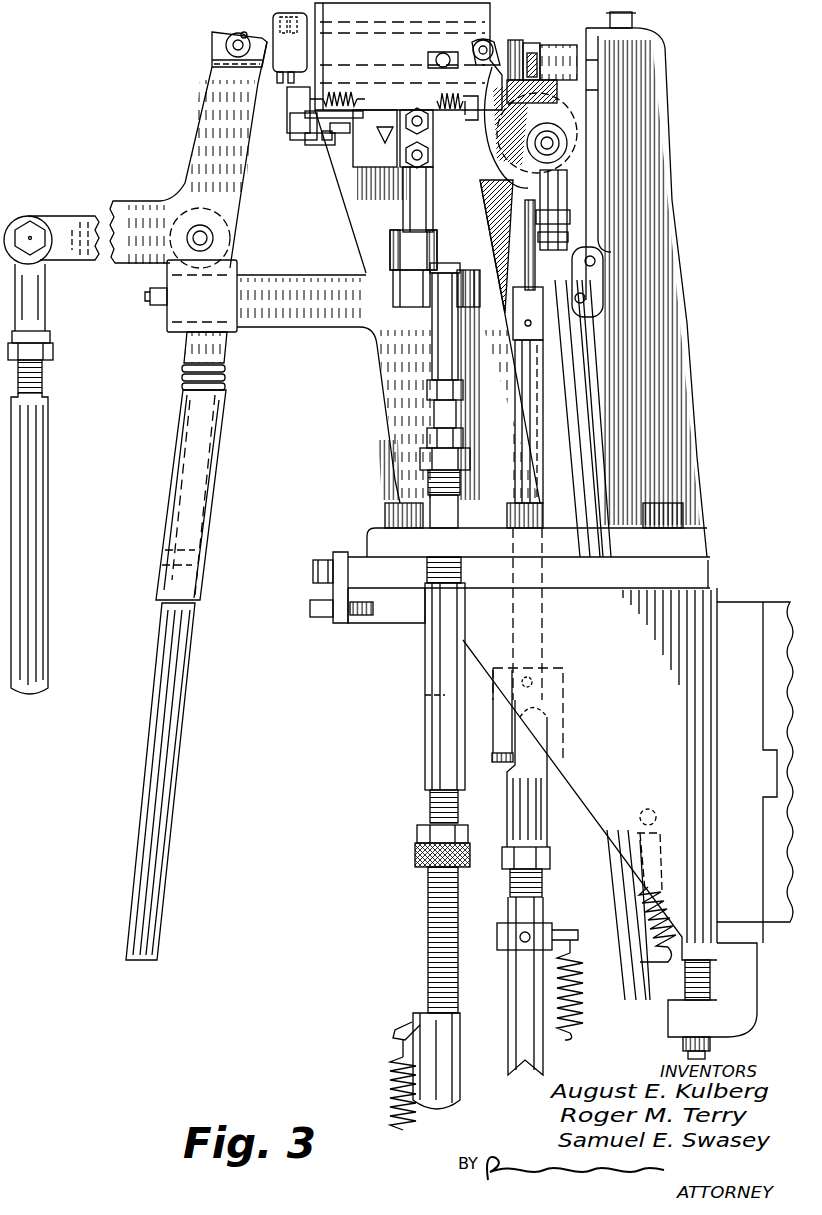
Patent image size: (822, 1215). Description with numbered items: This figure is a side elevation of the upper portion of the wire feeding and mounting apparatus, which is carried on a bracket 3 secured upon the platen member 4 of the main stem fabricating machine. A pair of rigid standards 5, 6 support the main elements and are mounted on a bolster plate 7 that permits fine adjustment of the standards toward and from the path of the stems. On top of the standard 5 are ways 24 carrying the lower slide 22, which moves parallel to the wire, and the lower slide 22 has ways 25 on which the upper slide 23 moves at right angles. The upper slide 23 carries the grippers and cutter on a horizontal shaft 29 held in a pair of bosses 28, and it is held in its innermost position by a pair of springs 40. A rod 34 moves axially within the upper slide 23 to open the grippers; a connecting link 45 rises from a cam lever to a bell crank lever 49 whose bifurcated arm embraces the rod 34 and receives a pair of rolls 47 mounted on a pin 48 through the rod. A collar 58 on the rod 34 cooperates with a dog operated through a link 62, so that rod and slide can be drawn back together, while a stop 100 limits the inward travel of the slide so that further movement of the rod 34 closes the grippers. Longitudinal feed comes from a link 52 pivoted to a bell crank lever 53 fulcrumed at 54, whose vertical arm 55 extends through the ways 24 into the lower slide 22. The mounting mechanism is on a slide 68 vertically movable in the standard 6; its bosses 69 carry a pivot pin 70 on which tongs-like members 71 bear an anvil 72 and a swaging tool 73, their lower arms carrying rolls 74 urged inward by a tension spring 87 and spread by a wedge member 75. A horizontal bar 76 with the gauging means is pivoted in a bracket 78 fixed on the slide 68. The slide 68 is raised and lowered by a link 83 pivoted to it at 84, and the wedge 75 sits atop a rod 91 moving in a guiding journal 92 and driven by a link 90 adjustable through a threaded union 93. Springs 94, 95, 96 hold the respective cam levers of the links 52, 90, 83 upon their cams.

The bracket 3 is at (617, 802).
The platen member 4 is at (778, 605).
The standard 5 is at (395, 445).
The standard 6 is at (677, 387).
The bolster plate 7 is at (355, 563).
The lower slide 22 is at (350, 128).
The upper slide 23 is at (300, 28).
The ways 24 is at (388, 143).
The ways 25 is at (355, 116).
The bosses 28 is at (500, 42).
The horizontal shaft 29 is at (436, 55).
The rod 34 is at (211, 36).
The springs 40 is at (348, 94).
The connecting link 45 is at (35, 449).
The rolls 47 is at (237, 33).
The pin 48 is at (228, 50).
The bell crank lever 49 is at (212, 120).
The link 52 is at (430, 370).
The bell crank lever 53 is at (383, 243).
The fulcrum 54 is at (392, 249).
The vertical arm 55 is at (413, 197).
The collar 58 is at (293, 43).
The link 62 is at (185, 635).
The slide 68 is at (600, 56).
The bosses 69 is at (568, 196).
The pivot pin 70 is at (540, 118).
The tongs-like members 71 is at (524, 46).
The anvil 72 is at (540, 50).
The swaging tool 73 is at (542, 44).
The rolls 74 is at (600, 290).
The wedge member 75 is at (600, 316).
The horizontal bar 76 is at (590, 73).
The bracket 78 is at (557, 92).
The link 83 is at (572, 368).
The pivot 84 is at (553, 143).
The tension spring 87 is at (508, 245).
The link 90 is at (525, 971).
The rod 91 is at (533, 392).
The guiding journal 92 is at (560, 473).
The threaded union 93 is at (538, 886).
The spring 94 is at (393, 1088).
The spring 95 is at (565, 1028).
The spring 96 is at (661, 918).
The stop 100 is at (332, 140).